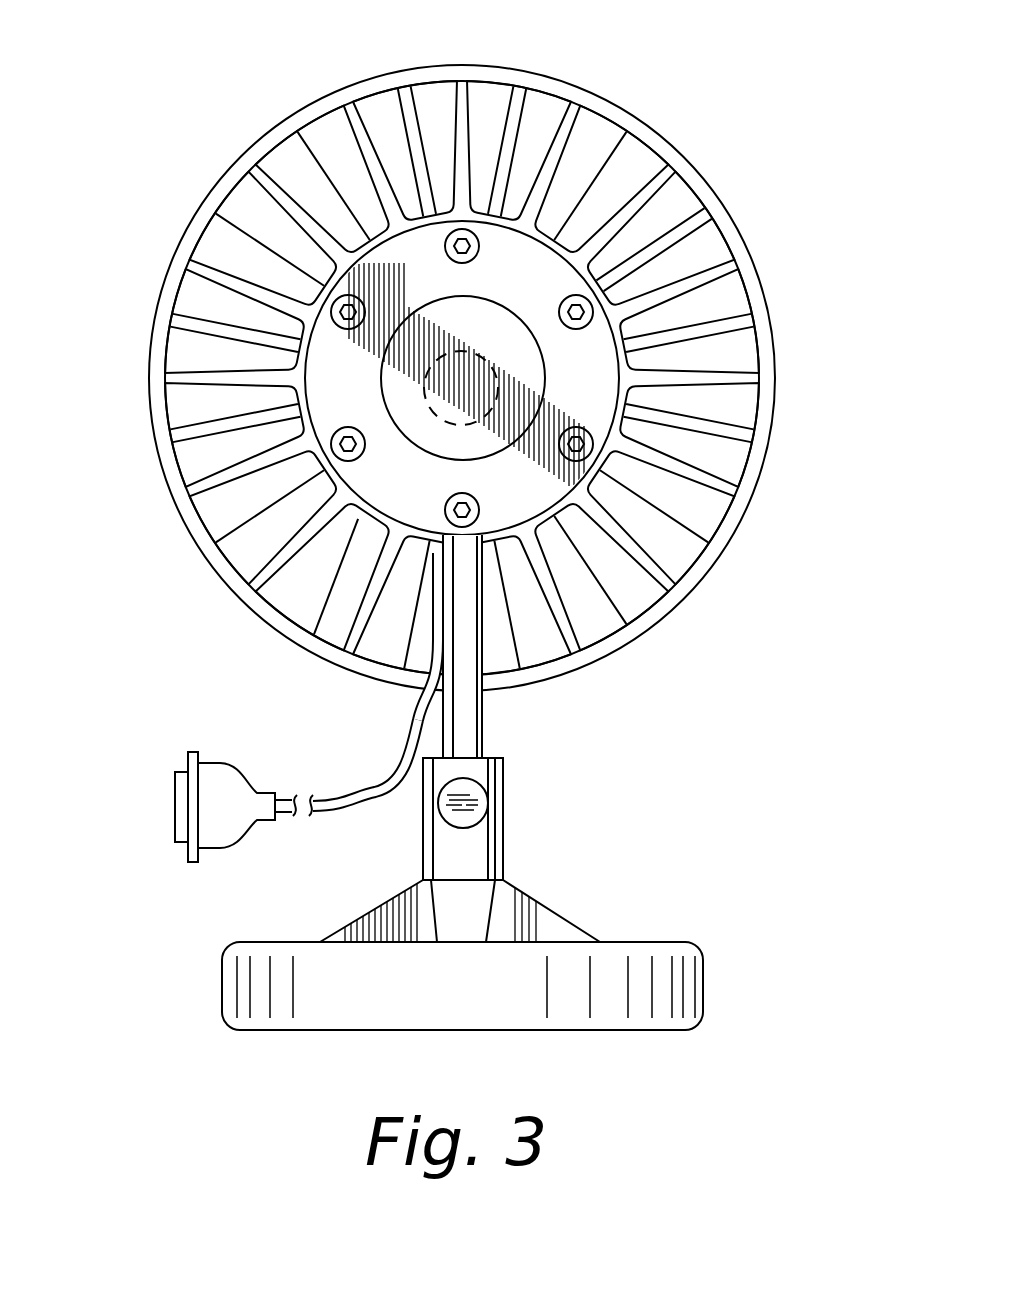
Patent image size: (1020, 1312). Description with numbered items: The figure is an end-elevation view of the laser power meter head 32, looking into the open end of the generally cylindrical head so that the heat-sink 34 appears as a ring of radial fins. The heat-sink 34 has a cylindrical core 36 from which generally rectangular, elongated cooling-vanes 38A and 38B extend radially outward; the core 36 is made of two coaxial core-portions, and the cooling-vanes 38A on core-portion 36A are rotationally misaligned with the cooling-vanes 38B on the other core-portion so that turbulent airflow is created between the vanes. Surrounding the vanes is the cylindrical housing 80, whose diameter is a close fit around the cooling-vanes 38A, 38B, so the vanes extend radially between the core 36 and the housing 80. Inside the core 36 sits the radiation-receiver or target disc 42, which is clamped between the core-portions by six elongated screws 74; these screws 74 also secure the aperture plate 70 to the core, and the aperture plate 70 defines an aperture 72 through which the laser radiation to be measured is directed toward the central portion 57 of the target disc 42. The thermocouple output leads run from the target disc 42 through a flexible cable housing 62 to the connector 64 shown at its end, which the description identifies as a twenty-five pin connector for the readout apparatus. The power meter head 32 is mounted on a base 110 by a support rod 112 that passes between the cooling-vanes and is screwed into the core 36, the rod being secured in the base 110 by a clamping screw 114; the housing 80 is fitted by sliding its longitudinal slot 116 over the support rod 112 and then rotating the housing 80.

The power meter head 32 is at (197, 626).
The heat-sink 34 is at (660, 213).
The cylindrical core 36 is at (643, 434).
The core-portion 36A is at (735, 376).
The cooling-vanes 38A is at (517, 113).
The cooling-vanes 38B is at (735, 382).
The target disc 42 is at (412, 384).
The central portion of target disc 57 is at (461, 400).
The flexible cable housing 62 is at (347, 808).
The plug 64 is at (220, 840).
The aperture plate 70 is at (422, 494).
The aperture 72 is at (498, 344).
The screws 74 is at (480, 250).
The cylindrical housing 80 is at (722, 568).
The base 110 is at (657, 942).
The support rod 112 is at (477, 643).
The clamping screw 114 is at (492, 817).
The longitudinal slot 116 is at (425, 673).